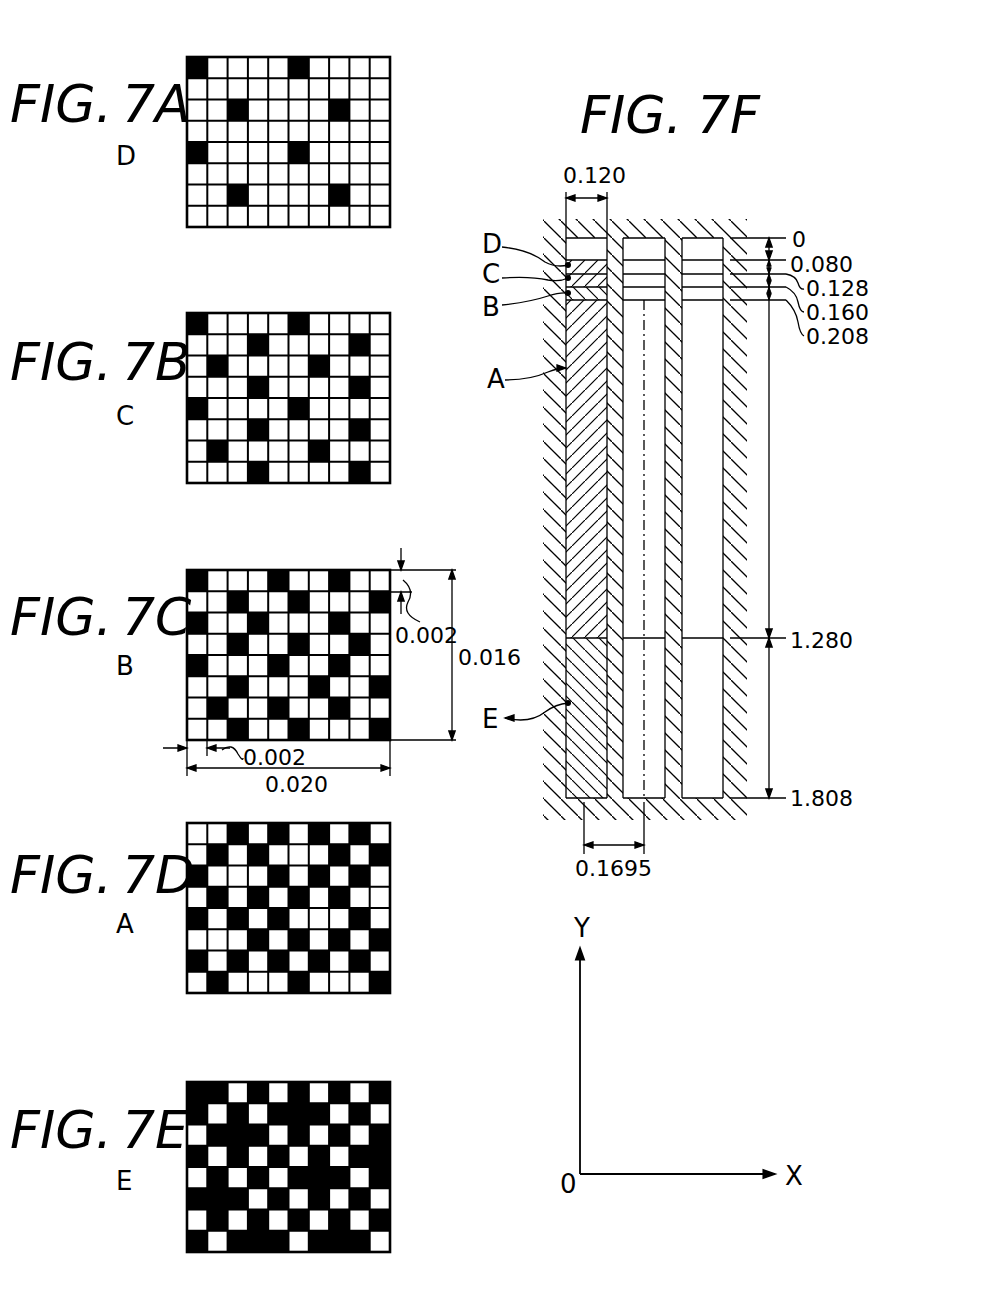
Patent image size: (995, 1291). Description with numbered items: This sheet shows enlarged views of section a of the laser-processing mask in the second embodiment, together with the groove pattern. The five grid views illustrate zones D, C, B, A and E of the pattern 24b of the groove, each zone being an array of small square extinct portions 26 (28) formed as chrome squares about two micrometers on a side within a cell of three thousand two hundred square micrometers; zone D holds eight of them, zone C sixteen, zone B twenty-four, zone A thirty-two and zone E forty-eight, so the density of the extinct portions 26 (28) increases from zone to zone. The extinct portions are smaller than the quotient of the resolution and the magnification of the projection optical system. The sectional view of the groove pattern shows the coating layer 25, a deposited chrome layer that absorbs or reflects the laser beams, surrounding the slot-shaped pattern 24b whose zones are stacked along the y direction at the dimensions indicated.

In FIG. 7A, the extinct portion 26 is at (355, 57).
In FIG. 7B, the extinct portion 26 is at (355, 313).
In FIG. 7C, the extinct portion 26 is at (356, 570).
In FIG. 7D, the extinct portion 26 is at (356, 823).
In FIG. 7E, the extinct portion 26 is at (356, 1082).
In FIG. 7A, the extinct portion 28 is at (288, 142).
In FIG. 7B, the extinct portion 28 is at (288, 398).
In FIG. 7C, the extinct portion 28 is at (288, 655).
In FIG. 7D, the extinct portion 28 is at (288, 908).
In FIG. 7E, the extinct portion 28 is at (288, 1167).
In FIG. 7F, the coating layer 25 is at (740, 487).
In FIG. 7F, the pattern of the groove 24b is at (565, 800).